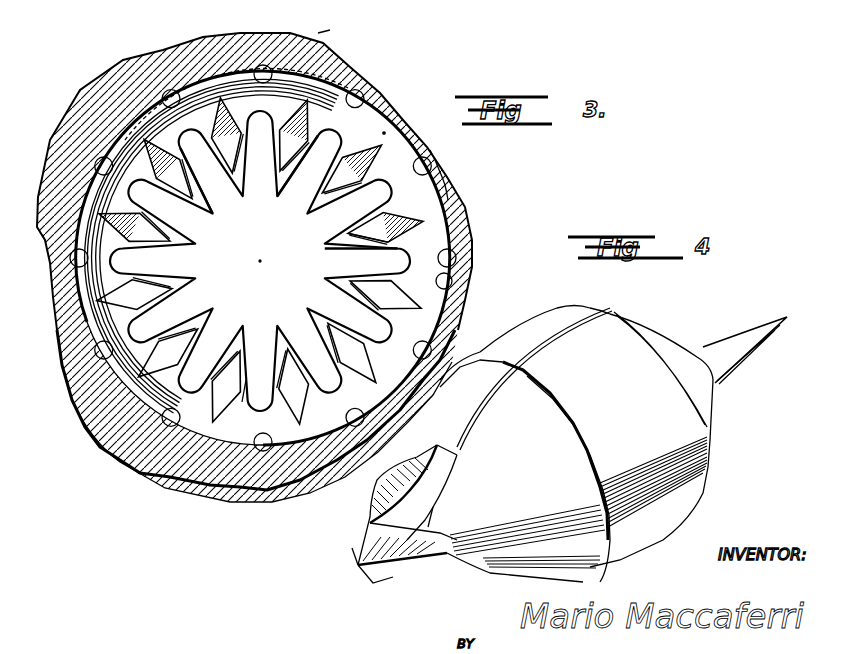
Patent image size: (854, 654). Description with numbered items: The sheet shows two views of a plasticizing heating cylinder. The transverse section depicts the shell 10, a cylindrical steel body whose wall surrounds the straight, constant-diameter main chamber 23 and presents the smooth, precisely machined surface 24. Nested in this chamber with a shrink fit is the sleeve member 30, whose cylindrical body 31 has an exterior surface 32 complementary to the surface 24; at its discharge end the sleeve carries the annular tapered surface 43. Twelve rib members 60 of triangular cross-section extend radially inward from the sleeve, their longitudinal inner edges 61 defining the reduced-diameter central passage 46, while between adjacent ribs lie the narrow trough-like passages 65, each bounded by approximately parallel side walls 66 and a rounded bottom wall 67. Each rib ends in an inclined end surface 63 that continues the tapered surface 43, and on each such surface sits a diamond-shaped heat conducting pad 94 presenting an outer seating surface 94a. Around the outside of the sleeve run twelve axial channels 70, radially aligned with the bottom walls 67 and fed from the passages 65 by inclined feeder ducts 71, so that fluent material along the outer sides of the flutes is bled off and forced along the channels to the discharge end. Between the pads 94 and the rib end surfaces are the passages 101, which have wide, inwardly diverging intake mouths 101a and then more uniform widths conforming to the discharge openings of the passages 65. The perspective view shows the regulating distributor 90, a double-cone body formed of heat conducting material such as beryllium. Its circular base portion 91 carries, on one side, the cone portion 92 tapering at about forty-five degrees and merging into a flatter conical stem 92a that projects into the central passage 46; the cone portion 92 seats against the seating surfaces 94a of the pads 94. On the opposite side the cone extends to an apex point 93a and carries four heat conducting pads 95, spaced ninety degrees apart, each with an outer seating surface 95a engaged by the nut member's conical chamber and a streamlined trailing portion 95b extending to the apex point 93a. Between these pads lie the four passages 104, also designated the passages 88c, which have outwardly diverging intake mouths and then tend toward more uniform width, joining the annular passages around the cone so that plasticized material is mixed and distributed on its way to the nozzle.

In FIG. 3, the shell 10 is at (462, 208).
In FIG. 3, the main chamber 23 is at (452, 162).
In FIG. 3, the chamber surface 24 is at (463, 188).
In FIG. 3, the sleeve member 30 is at (430, 240).
In FIG. 3, the sleeve body 31 is at (298, 75).
In FIG. 3, the exterior surface 32 is at (224, 72).
In FIG. 3, the annular tapered surface 43 is at (384, 133).
In FIG. 3, the central passage 46 is at (262, 309).
In FIG. 3, the rib members 60 is at (318, 203).
In FIG. 3, the inner edges 61 is at (335, 274).
In FIG. 3, the inclined end surface 63 is at (135, 130).
In FIG. 3, the passages 65 is at (140, 192).
In FIG. 3, the side walls 66 is at (196, 226).
In FIG. 3, the bottom wall 67 is at (461, 176).
In FIG. 3, the channels 70 is at (262, 68).
In FIG. 3, the feeder ducts 71 is at (322, 16).
In FIG. 3, the pads 94 is at (364, 150).
In FIG. 3, the seating surfaces 94a is at (212, 112).
In FIG. 3, the passages 101 is at (76, 408).
In FIG. 3, the intake mouths 101a is at (242, 402).
In FIG. 4, the passages 88c is at (428, 527).
In FIG. 4, the regulating distributor 90 is at (589, 298).
In FIG. 4, the base portion 91 is at (598, 330).
In FIG. 4, the cone portion 92 is at (677, 350).
In FIG. 4, the conical stem 92a is at (748, 367).
In FIG. 4, the apex point 93a is at (360, 572).
In FIG. 4, the pads 95 is at (437, 495).
In FIG. 4, the seating surface 95a is at (388, 481).
In FIG. 4, the trailing portion 95b is at (386, 522).
In FIG. 4, the passages 104 is at (437, 527).